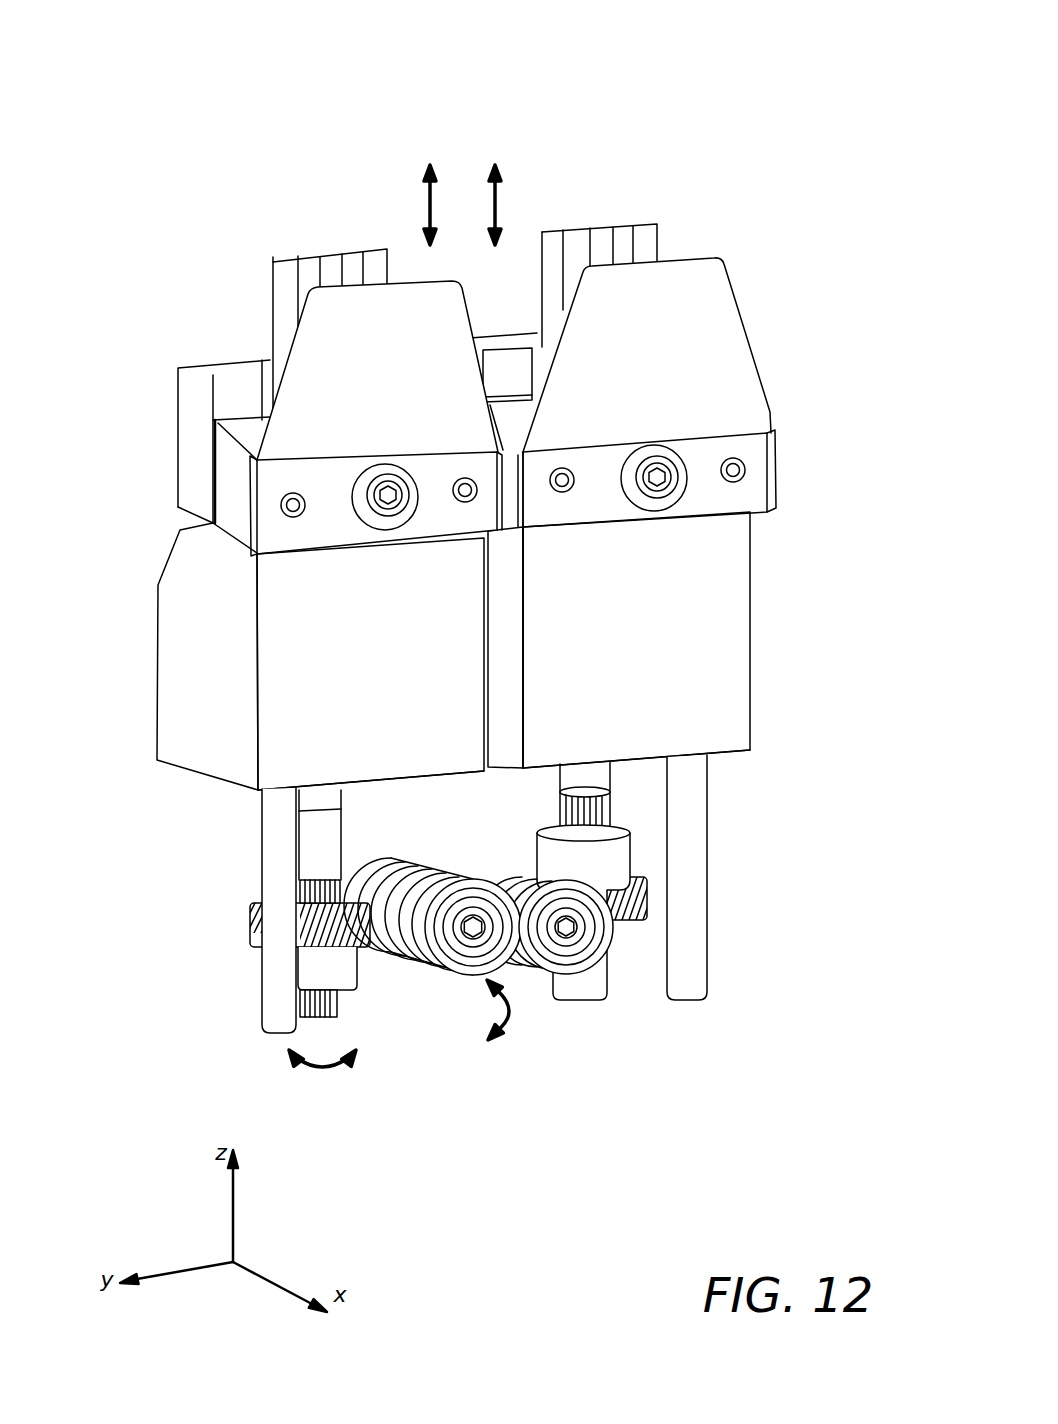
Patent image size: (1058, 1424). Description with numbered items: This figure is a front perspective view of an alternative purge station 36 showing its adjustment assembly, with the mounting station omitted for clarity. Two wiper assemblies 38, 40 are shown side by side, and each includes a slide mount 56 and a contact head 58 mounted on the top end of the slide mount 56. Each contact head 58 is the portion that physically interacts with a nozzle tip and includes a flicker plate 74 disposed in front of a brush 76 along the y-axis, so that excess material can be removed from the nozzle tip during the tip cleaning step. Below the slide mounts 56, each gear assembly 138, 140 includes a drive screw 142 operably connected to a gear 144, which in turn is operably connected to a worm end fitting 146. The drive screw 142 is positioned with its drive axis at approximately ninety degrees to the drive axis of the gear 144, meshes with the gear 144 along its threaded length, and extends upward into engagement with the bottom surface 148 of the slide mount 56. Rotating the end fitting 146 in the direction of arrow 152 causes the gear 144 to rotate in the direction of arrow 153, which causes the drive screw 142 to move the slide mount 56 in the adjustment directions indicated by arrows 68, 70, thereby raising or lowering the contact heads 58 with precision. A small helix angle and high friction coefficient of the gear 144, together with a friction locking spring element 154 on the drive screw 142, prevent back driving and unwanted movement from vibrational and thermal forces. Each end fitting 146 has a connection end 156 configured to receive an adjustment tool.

The gripper assembly 36 is at (473, 555).
The wiper assembly 38 is at (352, 160).
The wiper assembly 40 is at (696, 199).
The slide mount 56 is at (228, 670).
The contact head 58 is at (131, 298).
The arrow 68 is at (421, 185).
The arrow 70 is at (494, 185).
The flicker plate 74 is at (305, 433).
The brush 76 is at (237, 368).
The gear assembly 138 is at (221, 967).
The gear assembly 140 is at (633, 961).
The drive screw 142 is at (322, 798).
The gear 144 is at (361, 975).
The end fitting 146 is at (416, 981).
The bottom surface 148 is at (230, 787).
The arrow 152 is at (508, 1030).
The arrow 153 is at (322, 1079).
The friction locking spring element 154 is at (297, 890).
The connection end 156 is at (565, 922).